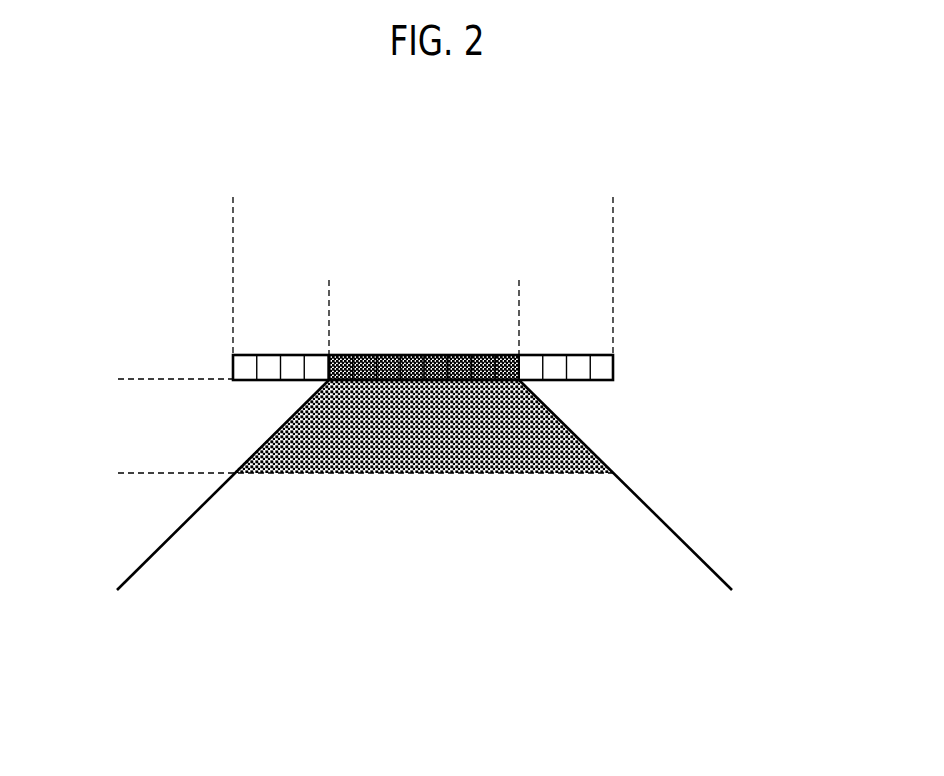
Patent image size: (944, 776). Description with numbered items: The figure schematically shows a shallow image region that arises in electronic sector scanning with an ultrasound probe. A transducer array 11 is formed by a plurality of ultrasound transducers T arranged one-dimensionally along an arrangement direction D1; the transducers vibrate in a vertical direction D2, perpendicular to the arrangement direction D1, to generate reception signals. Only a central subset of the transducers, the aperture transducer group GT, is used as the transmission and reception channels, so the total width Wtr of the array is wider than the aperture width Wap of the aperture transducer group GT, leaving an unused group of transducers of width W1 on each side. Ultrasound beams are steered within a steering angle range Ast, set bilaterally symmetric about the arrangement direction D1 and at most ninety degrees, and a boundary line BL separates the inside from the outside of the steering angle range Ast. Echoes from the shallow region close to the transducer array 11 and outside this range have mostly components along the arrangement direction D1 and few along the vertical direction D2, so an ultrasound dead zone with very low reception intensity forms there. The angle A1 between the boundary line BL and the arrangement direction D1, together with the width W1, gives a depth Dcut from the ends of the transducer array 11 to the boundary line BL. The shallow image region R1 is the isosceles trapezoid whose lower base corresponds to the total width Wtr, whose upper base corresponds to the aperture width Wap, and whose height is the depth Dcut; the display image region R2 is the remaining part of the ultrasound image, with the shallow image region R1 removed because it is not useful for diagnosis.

The transducer array 11 is at (425, 348).
The ultrasound transducer T is at (602, 367).
The aperture transducer group GT is at (482, 370).
The shallow image region R1 is at (562, 455).
The display image region R2 is at (635, 578).
The boundary line BL is at (150, 555).
The angle A1 is at (245, 462).
The steering angle range Ast is at (640, 503).
The depth Dcut is at (123, 380).
The arrangement direction D1 is at (342, 119).
The vertical direction D2 is at (783, 317).
The total width Wtr is at (233, 197).
The width W1 is at (329, 292).
The aperture width Wap is at (519, 292).